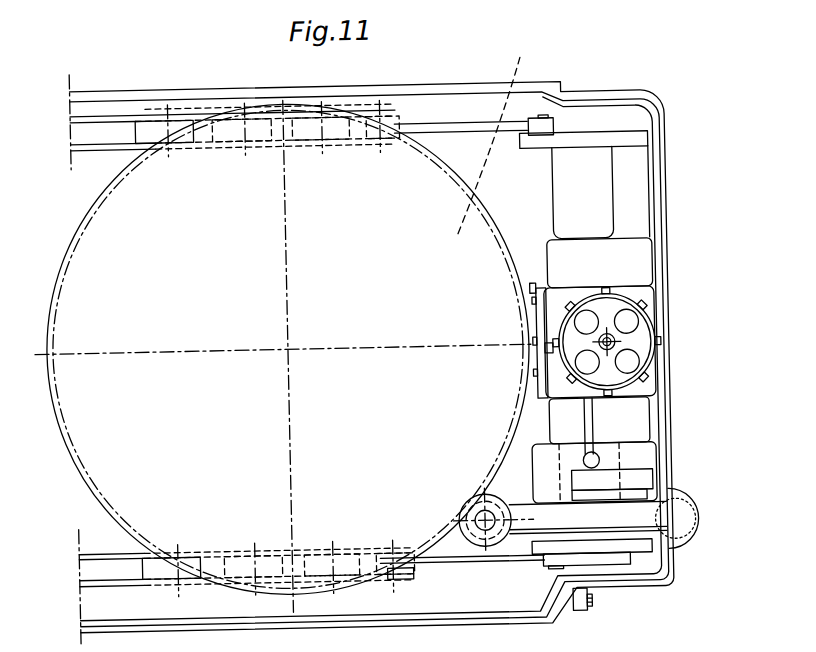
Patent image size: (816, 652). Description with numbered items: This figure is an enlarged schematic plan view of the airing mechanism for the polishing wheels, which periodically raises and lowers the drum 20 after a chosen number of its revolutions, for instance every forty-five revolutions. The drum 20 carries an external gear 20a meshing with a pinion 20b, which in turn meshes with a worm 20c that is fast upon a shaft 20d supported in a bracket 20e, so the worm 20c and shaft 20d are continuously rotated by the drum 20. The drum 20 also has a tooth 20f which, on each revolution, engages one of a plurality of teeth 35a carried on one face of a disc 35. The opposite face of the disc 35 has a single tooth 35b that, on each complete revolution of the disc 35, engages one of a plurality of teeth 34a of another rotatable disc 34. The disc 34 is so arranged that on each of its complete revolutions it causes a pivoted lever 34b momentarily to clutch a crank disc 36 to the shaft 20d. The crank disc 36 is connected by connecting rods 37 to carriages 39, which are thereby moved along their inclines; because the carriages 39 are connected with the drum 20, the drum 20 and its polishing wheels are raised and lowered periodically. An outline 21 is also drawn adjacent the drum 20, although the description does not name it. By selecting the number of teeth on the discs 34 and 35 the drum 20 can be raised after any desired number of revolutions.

The drum 20 is at (446, 154).
The external gear 20a is at (485, 205).
The pinion 20b is at (489, 537).
The worm 20c is at (646, 527).
The shaft 20d is at (578, 569).
The bracket 20e is at (641, 465).
The tooth 20f is at (537, 345).
The cover outline 21 is at (500, 137).
The rotatable disc 34 is at (653, 370).
The teeth 34a is at (540, 290).
The pivoted lever 34b is at (588, 441).
The disc 35 is at (542, 400).
The teeth 35a is at (539, 308).
The tooth 35b is at (547, 351).
The crank disc 36 is at (628, 552).
The connecting rods 37 is at (473, 564).
The carriages 39 is at (308, 131).